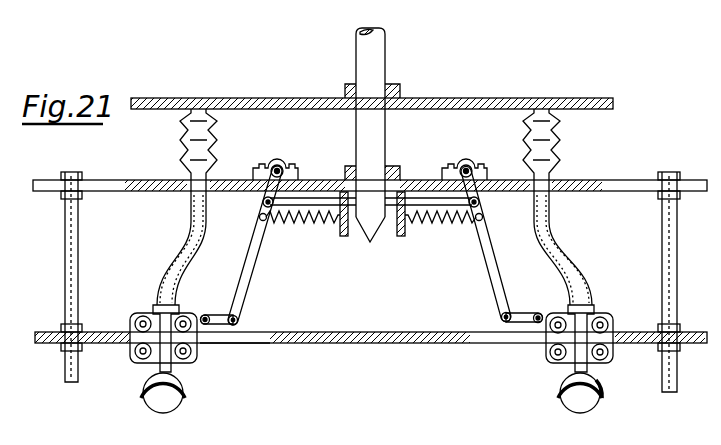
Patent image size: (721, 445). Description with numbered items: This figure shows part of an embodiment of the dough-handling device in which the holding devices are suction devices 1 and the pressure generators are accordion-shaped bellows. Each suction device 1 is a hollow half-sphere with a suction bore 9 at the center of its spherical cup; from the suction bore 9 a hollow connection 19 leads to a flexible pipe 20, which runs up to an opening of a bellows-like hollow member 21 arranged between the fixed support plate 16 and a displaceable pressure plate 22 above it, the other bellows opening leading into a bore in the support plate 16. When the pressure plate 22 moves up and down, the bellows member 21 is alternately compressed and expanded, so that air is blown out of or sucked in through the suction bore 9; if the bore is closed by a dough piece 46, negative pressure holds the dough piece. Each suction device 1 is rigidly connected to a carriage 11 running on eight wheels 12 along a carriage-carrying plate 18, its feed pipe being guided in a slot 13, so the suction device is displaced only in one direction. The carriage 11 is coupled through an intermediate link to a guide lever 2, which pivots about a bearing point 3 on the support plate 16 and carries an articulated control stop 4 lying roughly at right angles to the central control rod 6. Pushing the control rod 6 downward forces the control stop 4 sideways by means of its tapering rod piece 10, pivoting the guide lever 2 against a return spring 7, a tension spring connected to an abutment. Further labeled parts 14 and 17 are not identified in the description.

The suction device 1 is at (602, 388).
The guide lever 2 is at (249, 253).
The bearing point 3 is at (276, 166).
The control stop 4 is at (314, 206).
The control rod 6 is at (372, 65).
The return spring 7 is at (295, 223).
The suction bore 9 is at (581, 387).
The tapering rod piece 10 is at (368, 225).
The carriage 11 is at (177, 355).
The wheels 12 is at (135, 357).
The slot 13 is at (262, 347).
The short link 14 is at (218, 317).
The support plate 16 is at (422, 182).
The threaded rod 17 is at (72, 238).
The carriage-carrying plate 18 is at (360, 335).
The hollow connection 19 is at (570, 377).
The flexible pipe 20 is at (578, 263).
The bellows-like hollow member 21 is at (560, 137).
The pressure plate 22 is at (483, 98).
The dough piece 46 is at (575, 402).